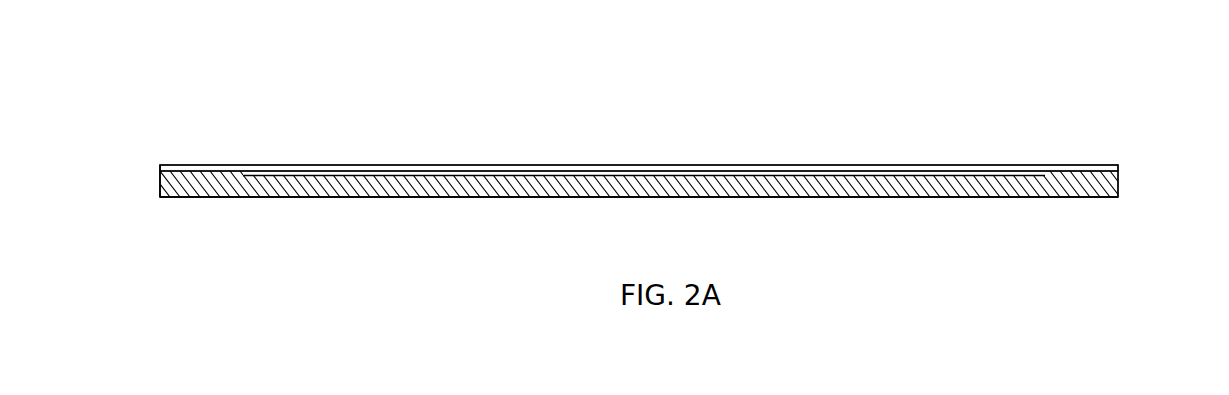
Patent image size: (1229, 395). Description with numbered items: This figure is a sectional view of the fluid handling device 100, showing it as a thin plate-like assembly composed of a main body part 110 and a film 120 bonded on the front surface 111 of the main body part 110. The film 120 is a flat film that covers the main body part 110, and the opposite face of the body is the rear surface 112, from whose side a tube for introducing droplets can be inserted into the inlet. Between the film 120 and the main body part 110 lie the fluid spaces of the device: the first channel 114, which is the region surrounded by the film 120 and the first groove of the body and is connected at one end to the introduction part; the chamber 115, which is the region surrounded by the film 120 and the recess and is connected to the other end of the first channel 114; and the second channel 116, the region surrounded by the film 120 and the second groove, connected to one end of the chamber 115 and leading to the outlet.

The fluid handling device 100 is at (1138, 46).
The main body part 110 is at (1119, 187).
The front surface 111 is at (153, 173).
The rear surface 112 is at (250, 198).
The first channel 114 is at (311, 176).
The chamber 115 is at (626, 176).
The second channel 116 is at (911, 174).
The film 120 is at (971, 165).